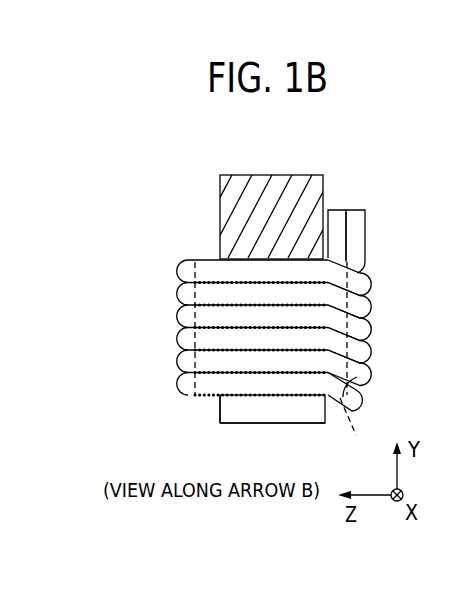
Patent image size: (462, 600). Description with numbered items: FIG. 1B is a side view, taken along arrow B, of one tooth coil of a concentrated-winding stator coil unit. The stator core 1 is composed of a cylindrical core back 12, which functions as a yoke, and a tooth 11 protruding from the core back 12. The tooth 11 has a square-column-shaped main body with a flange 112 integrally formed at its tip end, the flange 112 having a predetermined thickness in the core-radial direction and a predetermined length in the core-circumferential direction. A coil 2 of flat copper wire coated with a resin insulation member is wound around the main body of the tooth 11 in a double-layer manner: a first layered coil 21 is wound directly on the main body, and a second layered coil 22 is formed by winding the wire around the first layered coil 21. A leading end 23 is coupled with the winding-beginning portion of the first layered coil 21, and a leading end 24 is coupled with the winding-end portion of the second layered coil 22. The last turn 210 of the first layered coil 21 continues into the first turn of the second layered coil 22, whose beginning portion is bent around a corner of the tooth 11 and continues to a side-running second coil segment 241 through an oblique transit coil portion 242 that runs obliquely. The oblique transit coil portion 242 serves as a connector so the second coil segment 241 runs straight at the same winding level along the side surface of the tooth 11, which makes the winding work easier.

The stator core 1 is at (305, 154).
The coil 2 is at (166, 314).
The tooth 11 is at (309, 424).
The core back 12 is at (240, 185).
The first layered coil 21 is at (353, 429).
The second layered coil 22 is at (385, 411).
The leading end 23 is at (338, 213).
The leading end 24 is at (355, 237).
The flange 112 is at (230, 412).
The last turn 210 is at (180, 382).
The second coil segment 241 is at (267, 387).
The oblique transit coil portion 242 is at (358, 378).